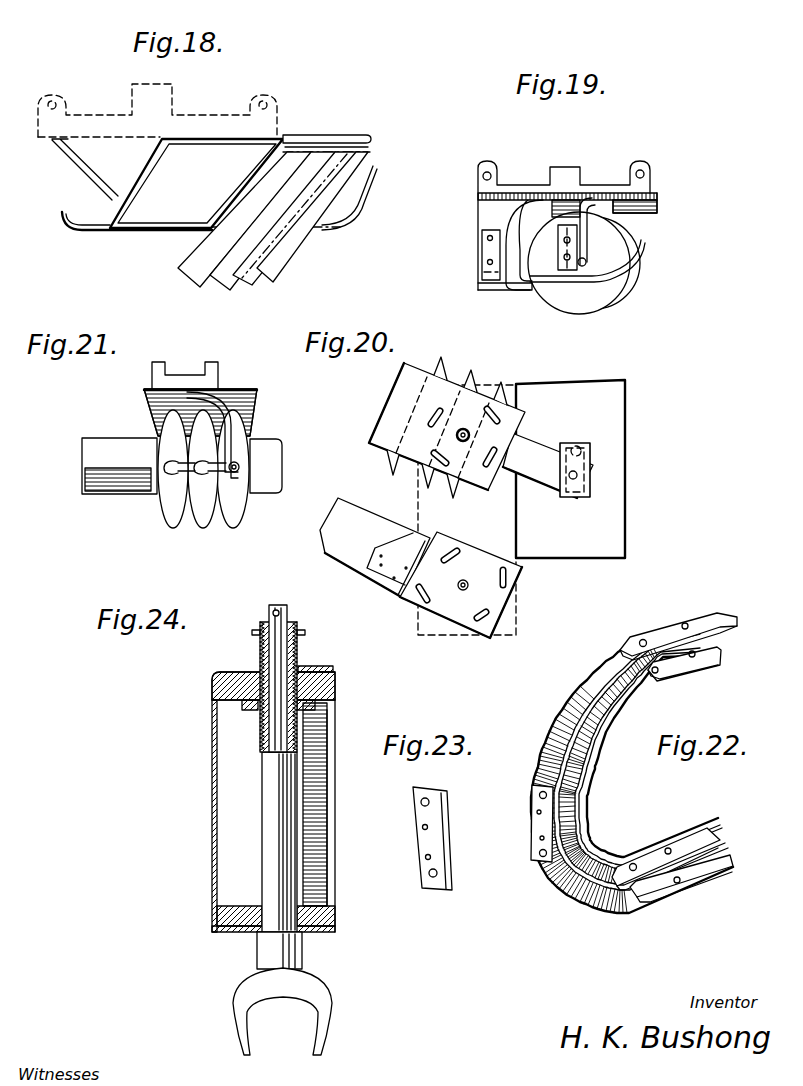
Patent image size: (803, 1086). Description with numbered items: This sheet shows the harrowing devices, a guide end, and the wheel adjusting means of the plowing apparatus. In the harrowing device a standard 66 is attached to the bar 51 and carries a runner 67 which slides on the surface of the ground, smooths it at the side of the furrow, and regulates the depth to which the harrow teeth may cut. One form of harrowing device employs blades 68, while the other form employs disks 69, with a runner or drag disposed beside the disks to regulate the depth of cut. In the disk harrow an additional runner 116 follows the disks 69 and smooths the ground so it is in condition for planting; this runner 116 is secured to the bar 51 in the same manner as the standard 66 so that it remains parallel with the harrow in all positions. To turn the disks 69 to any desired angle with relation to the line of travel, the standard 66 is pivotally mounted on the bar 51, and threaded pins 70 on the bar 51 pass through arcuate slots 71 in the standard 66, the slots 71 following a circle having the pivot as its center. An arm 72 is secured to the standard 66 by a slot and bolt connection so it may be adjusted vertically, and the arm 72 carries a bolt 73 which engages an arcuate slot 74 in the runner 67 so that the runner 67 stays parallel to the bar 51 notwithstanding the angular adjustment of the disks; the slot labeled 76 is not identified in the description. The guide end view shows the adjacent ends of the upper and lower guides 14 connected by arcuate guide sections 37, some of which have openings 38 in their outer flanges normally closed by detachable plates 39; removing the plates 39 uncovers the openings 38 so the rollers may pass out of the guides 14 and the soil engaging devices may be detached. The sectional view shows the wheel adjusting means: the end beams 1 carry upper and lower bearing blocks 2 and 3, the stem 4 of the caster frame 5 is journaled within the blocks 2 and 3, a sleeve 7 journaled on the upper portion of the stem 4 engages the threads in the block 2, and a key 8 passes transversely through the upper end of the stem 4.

In FIG. 18, the bar 51 is at (208, 115).
In FIG. 19, the bar 51 is at (588, 184).
In FIG. 21, the bar 51 is at (207, 385).
In FIG. 20, the bar 51 is at (520, 633).
In FIG. 18, the standard 66 is at (145, 171).
In FIG. 19, the standard 66 is at (658, 198).
In FIG. 21, the standard 66 is at (233, 437).
In FIG. 20, the standard 66 is at (443, 438).
In FIG. 18, the runner 67 is at (360, 212).
In FIG. 19, the runner 67 is at (600, 280).
In FIG. 21, the runner 67 is at (105, 495).
In FIG. 20, the runner 67 is at (612, 549).
In FIG. 18, the blades 68 is at (268, 262).
In FIG. 19, the disks 69 is at (645, 268).
In FIG. 21, the disks 69 is at (239, 460).
In FIG. 20, the disks 69 is at (388, 463).
In FIG. 19, the arm 72 is at (585, 248).
In FIG. 20, the arm 72 is at (543, 495).
In FIG. 21, the runner 116 is at (262, 465).
In FIG. 20, the runner 116 is at (336, 553).
In FIG. 20, the threaded pins 70 is at (485, 490).
In FIG. 20, the arcuate slots 71 is at (483, 632).
In FIG. 20, the bolt 73 is at (592, 487).
In FIG. 20, the arcuate slot 74 is at (576, 446).
In FIG. 20, the slot 76 is at (494, 408).
In FIG. 24, the end beams 1 is at (318, 797).
In FIG. 24, the upper bearing block 2 is at (212, 690).
In FIG. 24, the lower bearing block 3 is at (212, 918).
In FIG. 24, the stem 4 is at (272, 822).
In FIG. 24, the caster frame 5 is at (318, 995).
In FIG. 24, the sleeve 7 is at (260, 651).
In FIG. 24, the key 8 is at (290, 612).
In FIG. 22, the guides 14 is at (712, 620).
In FIG. 22, the arcuate guide sections 37 is at (585, 747).
In FIG. 22, the openings 38 is at (577, 805).
In FIG. 23, the detachable plates 39 is at (433, 845).
In FIG. 22, the detachable plates 39 is at (533, 807).